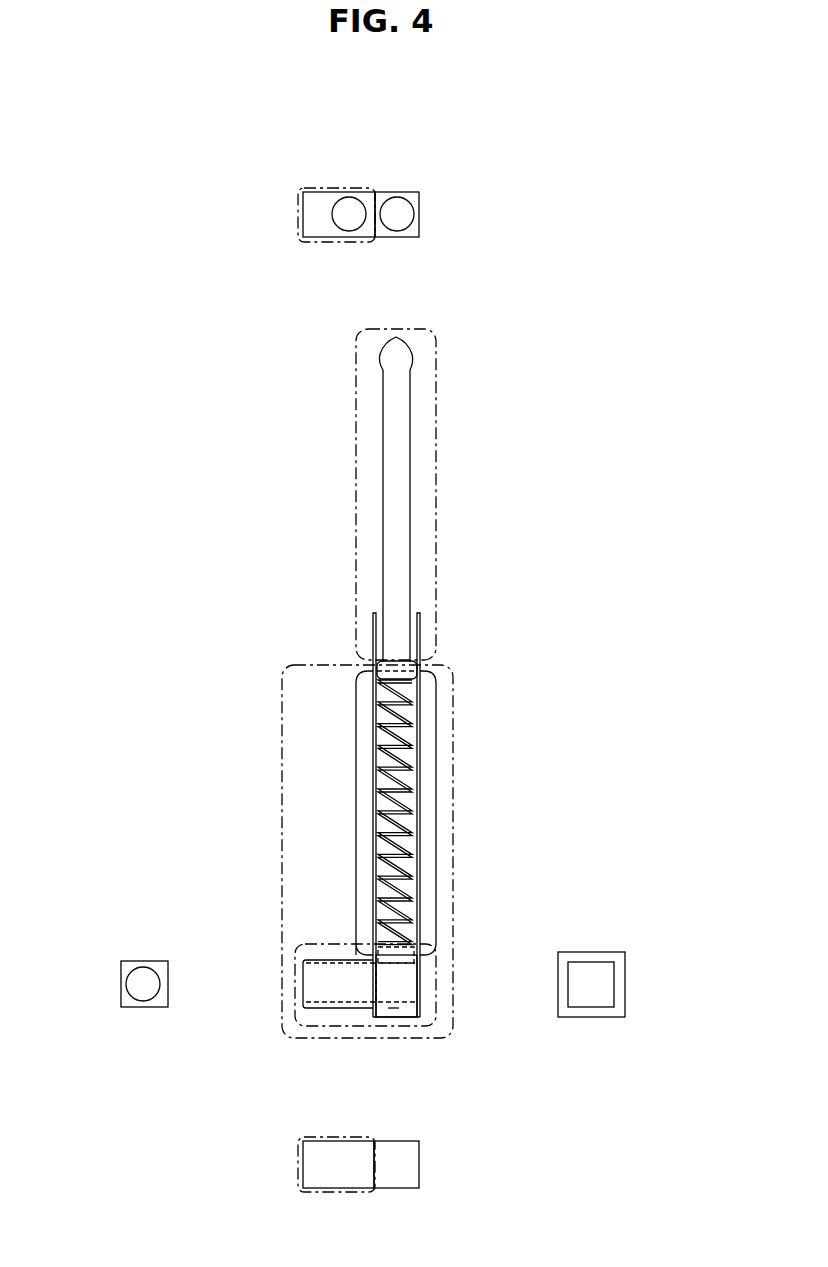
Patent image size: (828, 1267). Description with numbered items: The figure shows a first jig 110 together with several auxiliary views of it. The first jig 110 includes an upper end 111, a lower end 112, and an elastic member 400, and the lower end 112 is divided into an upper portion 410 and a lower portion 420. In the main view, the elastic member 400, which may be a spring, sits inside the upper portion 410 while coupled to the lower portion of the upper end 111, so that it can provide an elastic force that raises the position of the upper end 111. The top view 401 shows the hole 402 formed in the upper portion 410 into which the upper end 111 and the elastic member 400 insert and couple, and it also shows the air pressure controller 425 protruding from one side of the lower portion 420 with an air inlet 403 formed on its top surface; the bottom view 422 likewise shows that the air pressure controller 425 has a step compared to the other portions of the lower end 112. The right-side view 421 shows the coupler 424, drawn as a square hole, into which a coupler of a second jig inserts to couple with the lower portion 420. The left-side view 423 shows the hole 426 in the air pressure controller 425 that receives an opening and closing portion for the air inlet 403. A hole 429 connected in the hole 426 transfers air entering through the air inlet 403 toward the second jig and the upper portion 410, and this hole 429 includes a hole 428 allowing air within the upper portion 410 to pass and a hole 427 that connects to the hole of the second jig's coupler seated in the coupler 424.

The top view 401 is at (352, 117).
The hole 402 is at (413, 213).
The air inlet 403 is at (348, 196).
The air pressure controller 425 is at (299, 213).
The upper end 111 is at (437, 493).
The lower end 112 is at (453, 745).
The first jig 110 is at (428, 697).
The upper portion 410 is at (437, 805).
The elastic member 400 is at (408, 883).
The hole 428 is at (413, 947).
The lower portion 420 is at (424, 970).
The hole 427 is at (419, 1004).
The hole 429 is at (394, 1012).
The left-side view 423 is at (123, 938).
The hole 426 is at (128, 980).
The right-side view 421 is at (610, 927).
The coupler 424 is at (615, 983).
The bottom view 422 is at (342, 1121).